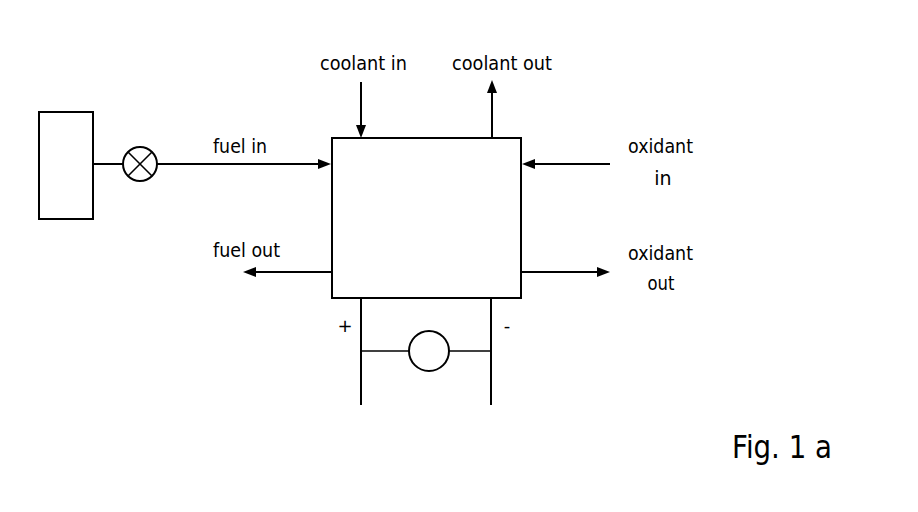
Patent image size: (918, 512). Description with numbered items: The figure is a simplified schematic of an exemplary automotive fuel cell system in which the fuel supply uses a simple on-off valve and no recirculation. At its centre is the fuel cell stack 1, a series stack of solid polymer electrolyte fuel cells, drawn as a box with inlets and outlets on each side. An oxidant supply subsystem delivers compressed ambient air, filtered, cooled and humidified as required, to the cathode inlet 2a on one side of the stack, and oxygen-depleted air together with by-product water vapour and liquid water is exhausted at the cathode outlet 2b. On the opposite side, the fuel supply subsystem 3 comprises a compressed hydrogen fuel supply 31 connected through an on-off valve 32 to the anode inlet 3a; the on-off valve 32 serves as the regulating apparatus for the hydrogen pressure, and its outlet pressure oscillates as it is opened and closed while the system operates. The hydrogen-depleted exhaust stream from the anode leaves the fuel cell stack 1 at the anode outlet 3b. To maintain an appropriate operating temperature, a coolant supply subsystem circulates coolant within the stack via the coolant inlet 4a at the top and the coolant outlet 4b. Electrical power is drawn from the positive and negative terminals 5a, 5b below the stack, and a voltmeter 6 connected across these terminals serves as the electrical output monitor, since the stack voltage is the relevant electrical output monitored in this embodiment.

The fuel cell stack 1 is at (512, 253).
The cathode inlet 2a is at (530, 168).
The cathode outlet 2b is at (523, 273).
The fuel supply subsystem 3 is at (101, 142).
The anode inlet 3a is at (325, 170).
The anode outlet 3b is at (327, 275).
The coolant inlet 4a is at (370, 133).
The coolant outlet 4b is at (497, 133).
The positive terminal 5a is at (359, 351).
The negative terminal 5b is at (493, 351).
The voltmeter 6 is at (429, 371).
The compressed hydrogen fuel supply 31 is at (65, 208).
The on-off valve 32 is at (143, 183).